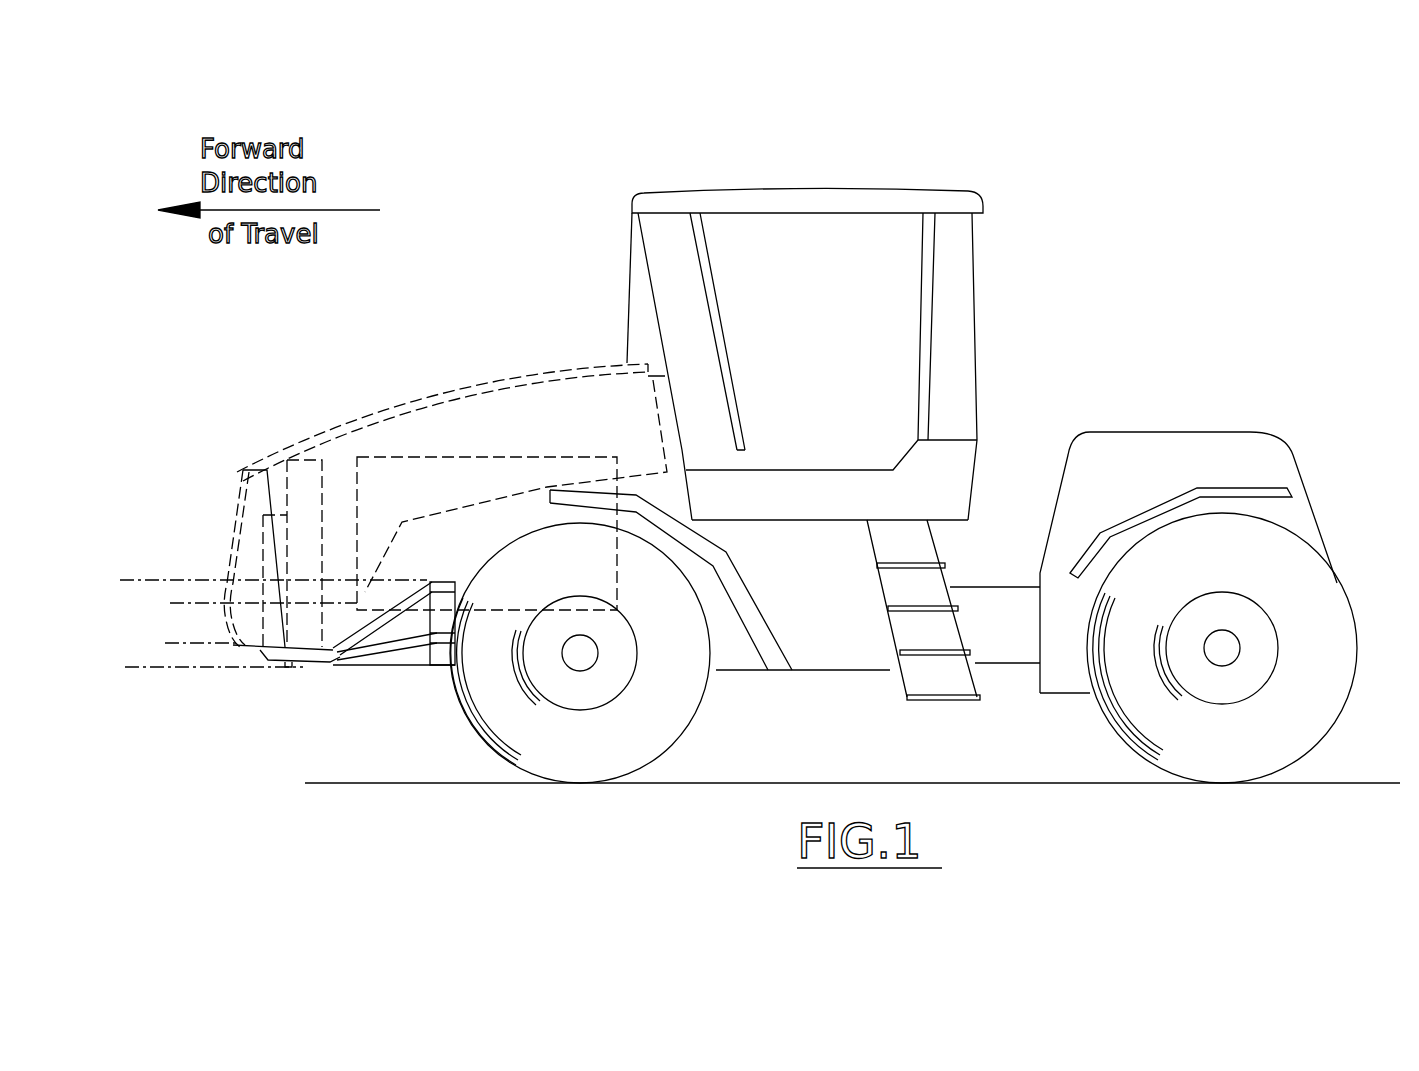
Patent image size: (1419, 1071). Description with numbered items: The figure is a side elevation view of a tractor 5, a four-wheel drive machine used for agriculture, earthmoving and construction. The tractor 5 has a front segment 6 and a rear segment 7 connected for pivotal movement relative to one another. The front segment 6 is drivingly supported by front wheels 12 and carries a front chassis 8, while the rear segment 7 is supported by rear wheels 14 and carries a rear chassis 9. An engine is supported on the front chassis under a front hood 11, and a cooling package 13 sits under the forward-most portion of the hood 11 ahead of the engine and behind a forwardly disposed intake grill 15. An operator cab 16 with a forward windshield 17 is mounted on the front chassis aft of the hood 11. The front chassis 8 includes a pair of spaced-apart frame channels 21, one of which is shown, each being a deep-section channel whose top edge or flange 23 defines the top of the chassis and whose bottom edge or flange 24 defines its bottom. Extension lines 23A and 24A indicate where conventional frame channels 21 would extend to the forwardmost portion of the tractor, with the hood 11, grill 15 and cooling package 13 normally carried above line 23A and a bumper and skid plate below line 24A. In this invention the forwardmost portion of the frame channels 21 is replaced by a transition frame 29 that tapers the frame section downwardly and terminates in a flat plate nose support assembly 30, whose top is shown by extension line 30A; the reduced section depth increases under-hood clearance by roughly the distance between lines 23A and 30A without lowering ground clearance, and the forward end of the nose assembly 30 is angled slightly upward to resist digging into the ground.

The tractor 5 is at (1065, 240).
The front segment 6 is at (315, 292).
The rear segment 7 is at (1145, 385).
The front chassis 8 is at (735, 650).
The rear chassis 9 is at (1007, 647).
The front hood 11 is at (495, 393).
The front wheels 12 is at (375, 458).
The cooling package 13 is at (270, 458).
The rear wheels 14 is at (1300, 573).
The intake grill 15 is at (235, 520).
The operator cab 16 is at (925, 192).
The windshield 17 is at (627, 297).
The frame channels 21 is at (437, 665).
The top edge or flange 23 is at (447, 580).
The extension line 23A is at (195, 580).
The bottom edge or flange 24 is at (392, 670).
The extension line 24A is at (185, 668).
The transition frame 29 is at (397, 627).
The flat plate nose support assembly 30 is at (275, 700).
The extension line 30A is at (207, 643).